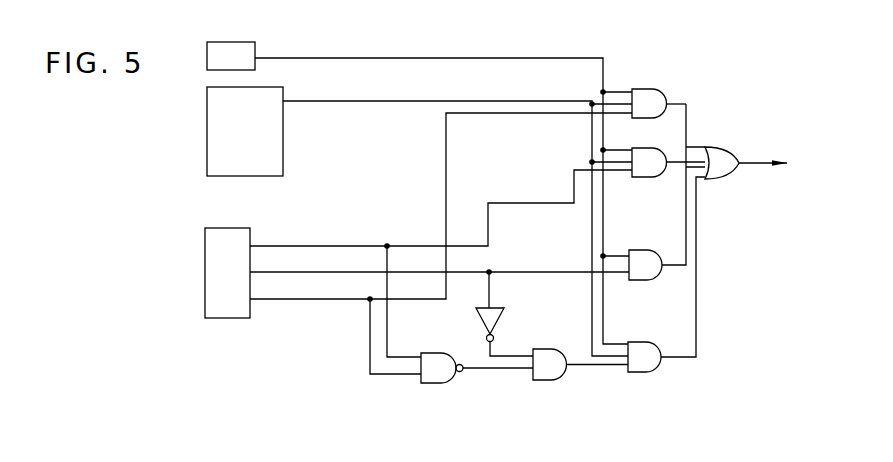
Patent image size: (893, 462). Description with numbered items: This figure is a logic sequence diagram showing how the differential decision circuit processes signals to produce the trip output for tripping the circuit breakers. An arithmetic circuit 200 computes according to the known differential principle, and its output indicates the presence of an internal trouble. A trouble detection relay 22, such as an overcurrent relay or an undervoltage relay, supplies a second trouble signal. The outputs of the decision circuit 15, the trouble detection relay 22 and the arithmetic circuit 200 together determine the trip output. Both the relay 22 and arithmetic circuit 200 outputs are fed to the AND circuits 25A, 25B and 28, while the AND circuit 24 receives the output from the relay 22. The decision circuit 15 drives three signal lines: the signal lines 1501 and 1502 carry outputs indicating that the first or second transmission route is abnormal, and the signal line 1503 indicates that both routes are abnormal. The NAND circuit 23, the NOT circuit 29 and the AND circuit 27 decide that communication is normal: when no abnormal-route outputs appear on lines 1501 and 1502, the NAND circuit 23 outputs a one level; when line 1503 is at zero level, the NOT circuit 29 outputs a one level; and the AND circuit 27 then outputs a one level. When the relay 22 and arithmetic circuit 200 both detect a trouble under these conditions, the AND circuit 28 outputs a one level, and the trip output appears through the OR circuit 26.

The trouble detection relay 22 is at (255, 42).
The arithmetic circuit 200 is at (284, 90).
The decision circuit 15 is at (226, 228).
The signal line 1501 is at (279, 249).
The signal line 1503 is at (279, 274).
The signal line 1502 is at (279, 300).
The NAND circuit 23 is at (432, 353).
The NOT circuit 29 is at (500, 308).
The AND circuit 27 is at (549, 349).
The AND circuit 28 is at (645, 342).
The AND circuit 24 is at (646, 250).
The AND circuit 25A is at (646, 89).
The AND circuit 25B is at (647, 177).
The OR circuit 26 is at (724, 148).